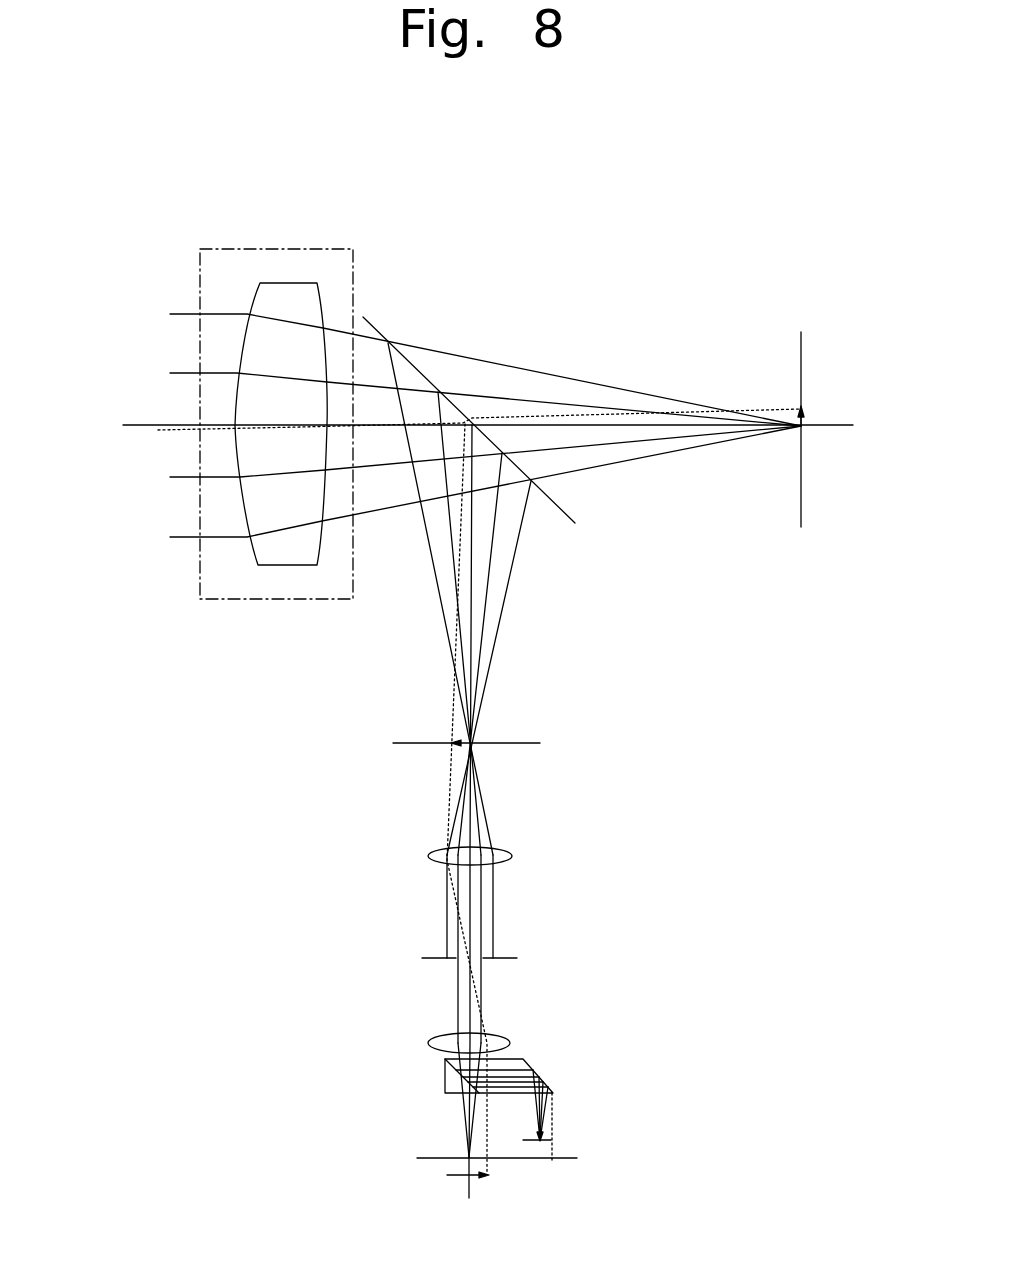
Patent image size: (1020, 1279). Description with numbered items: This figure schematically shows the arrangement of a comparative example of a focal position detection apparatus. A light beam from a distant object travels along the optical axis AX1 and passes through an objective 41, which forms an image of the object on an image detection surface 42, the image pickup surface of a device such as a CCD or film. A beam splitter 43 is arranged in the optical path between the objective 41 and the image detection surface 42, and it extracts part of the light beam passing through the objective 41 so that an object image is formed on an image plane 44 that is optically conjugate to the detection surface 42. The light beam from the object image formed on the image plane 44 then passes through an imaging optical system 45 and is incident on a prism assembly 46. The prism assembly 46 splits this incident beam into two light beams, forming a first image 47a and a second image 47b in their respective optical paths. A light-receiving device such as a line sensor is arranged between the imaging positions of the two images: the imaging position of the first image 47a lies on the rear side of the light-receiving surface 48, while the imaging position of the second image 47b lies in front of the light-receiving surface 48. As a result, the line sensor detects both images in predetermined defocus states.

The optical axis AX1 is at (133, 425).
The objective 41 is at (288, 283).
The image detection surface 42 is at (802, 343).
The beam splitter 43 is at (372, 325).
The image plane 44 is at (523, 743).
The imaging optical system 45 is at (403, 853).
The prism assembly 46 is at (527, 1060).
The first image 47a is at (463, 1178).
The second image 47b is at (525, 1142).
The light-receiving surface 48 is at (570, 1158).